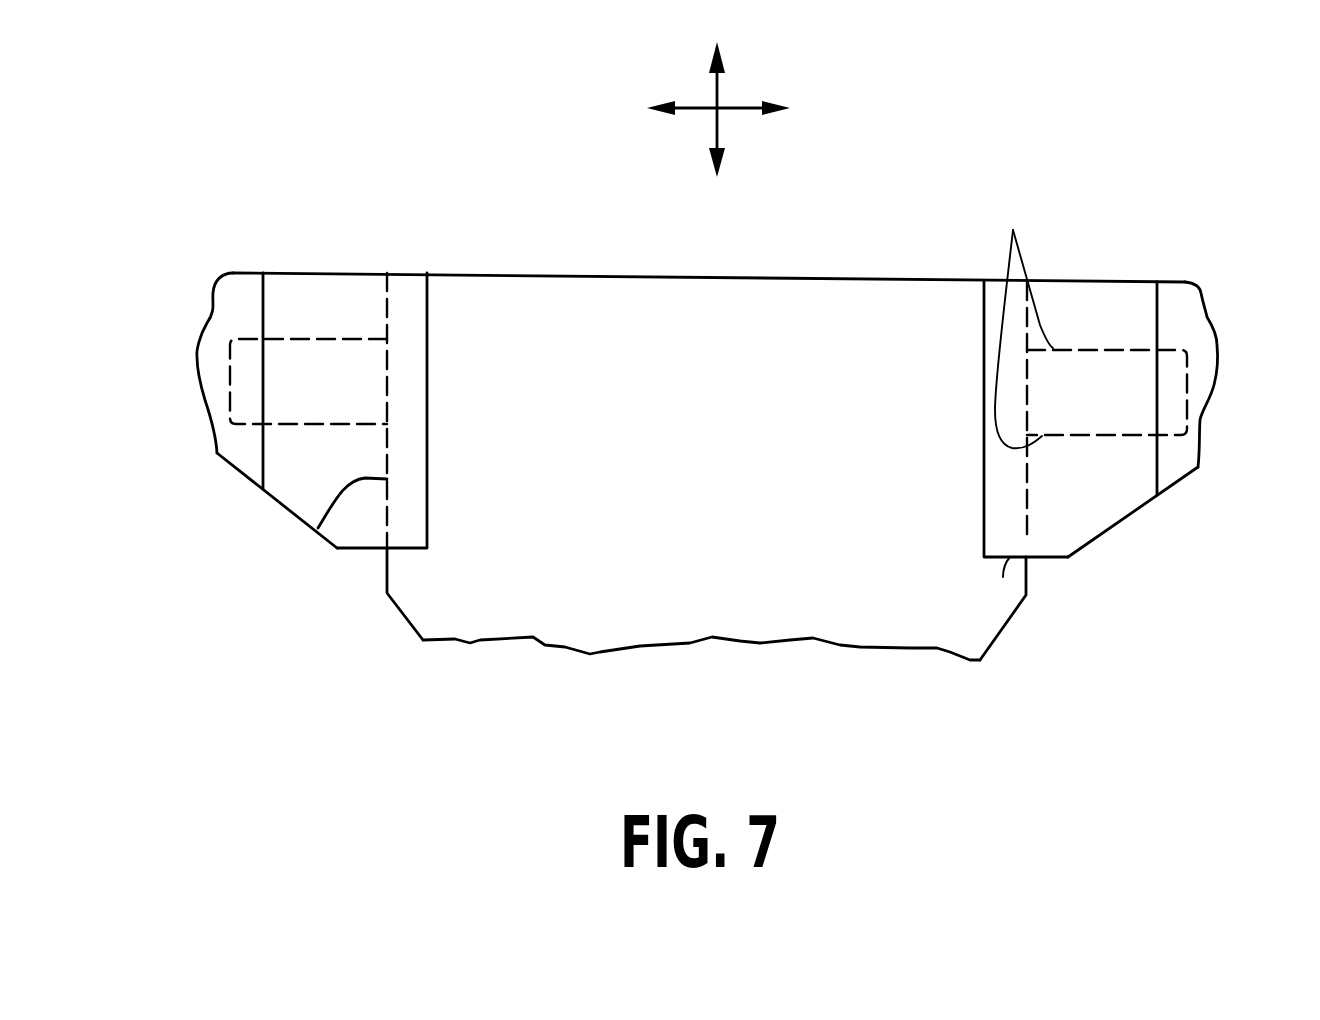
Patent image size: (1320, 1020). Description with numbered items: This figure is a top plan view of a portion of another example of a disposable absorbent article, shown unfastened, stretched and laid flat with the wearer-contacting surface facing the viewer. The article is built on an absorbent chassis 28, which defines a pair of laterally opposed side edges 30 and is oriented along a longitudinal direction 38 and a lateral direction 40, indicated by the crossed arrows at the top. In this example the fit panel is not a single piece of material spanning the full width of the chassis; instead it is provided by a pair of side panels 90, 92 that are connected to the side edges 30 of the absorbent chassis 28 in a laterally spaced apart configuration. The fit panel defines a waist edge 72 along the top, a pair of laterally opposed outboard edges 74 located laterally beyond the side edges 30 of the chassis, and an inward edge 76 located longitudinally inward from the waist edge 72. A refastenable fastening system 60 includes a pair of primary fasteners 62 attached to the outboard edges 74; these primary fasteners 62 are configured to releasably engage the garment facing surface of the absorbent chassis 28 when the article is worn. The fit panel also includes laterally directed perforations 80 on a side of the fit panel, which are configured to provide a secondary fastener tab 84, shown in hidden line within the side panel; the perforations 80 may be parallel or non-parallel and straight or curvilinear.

The absorbent chassis 28 is at (898, 623).
The side edges 30 is at (320, 520).
The longitudinal direction 38 is at (720, 85).
The lateral direction 40 is at (742, 110).
The refastenable fastening system 60 is at (705, 450).
The primary fasteners 62 is at (217, 453).
The waist edge 72 is at (335, 272).
The outboard edges 74 is at (200, 332).
The inward edge 76 is at (1003, 577).
The perforations 80 is at (1024, 324).
The secondary fastener tab 84 is at (230, 392).
The side panel 90 is at (293, 478).
The side panel 92 is at (1087, 510).